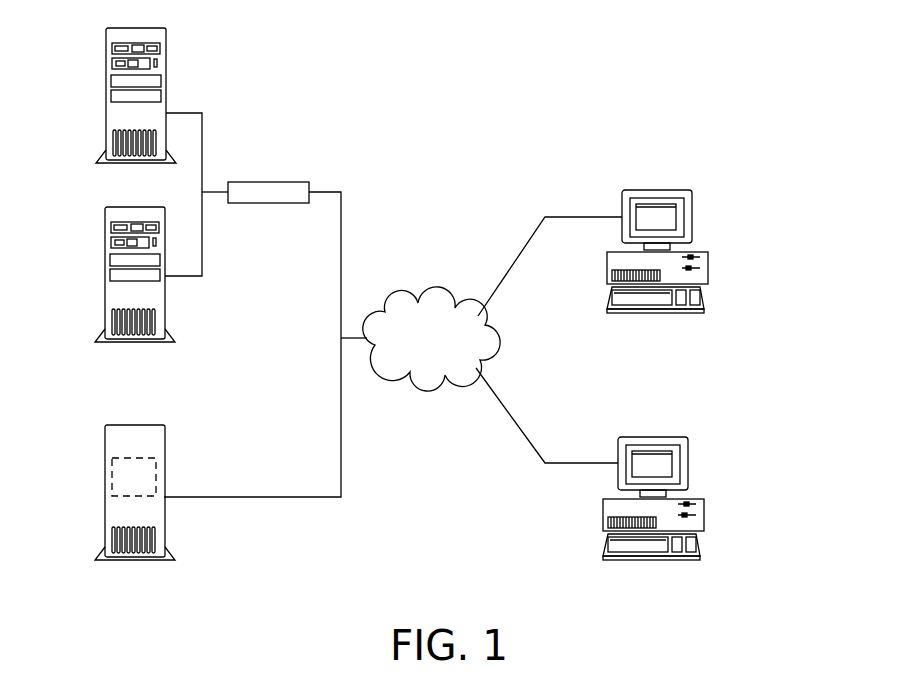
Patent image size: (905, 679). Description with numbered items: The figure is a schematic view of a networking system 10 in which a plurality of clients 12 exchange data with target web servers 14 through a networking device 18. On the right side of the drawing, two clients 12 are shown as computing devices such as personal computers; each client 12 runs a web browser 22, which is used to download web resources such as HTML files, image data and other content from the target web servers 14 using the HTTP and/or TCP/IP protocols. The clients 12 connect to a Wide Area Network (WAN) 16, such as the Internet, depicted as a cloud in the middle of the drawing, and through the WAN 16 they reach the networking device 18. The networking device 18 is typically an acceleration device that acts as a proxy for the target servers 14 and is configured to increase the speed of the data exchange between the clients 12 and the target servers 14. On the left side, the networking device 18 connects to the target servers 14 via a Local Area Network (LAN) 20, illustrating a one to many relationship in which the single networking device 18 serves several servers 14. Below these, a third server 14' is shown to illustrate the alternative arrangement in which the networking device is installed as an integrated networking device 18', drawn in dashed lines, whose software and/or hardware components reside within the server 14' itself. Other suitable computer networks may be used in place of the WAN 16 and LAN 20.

The networking system 10 is at (543, 90).
The client 12 is at (694, 217).
The target web server 14 is at (126, 199).
The server 14' is at (125, 490).
The Wide Area Network (WAN) 16 is at (436, 372).
The networking device 18 is at (269, 203).
The integrated networking device 18' is at (103, 494).
The Local Area Network (LAN) 20 is at (203, 130).
The web browser 22 is at (648, 215).